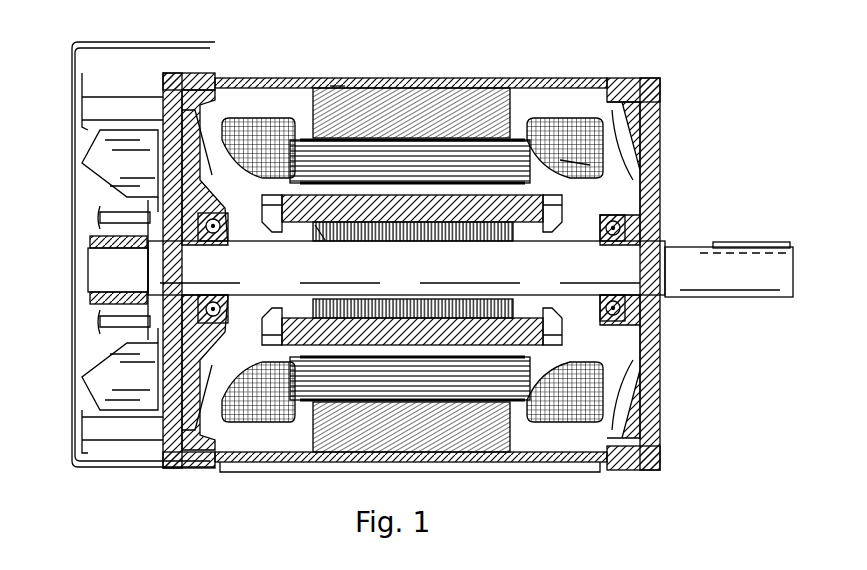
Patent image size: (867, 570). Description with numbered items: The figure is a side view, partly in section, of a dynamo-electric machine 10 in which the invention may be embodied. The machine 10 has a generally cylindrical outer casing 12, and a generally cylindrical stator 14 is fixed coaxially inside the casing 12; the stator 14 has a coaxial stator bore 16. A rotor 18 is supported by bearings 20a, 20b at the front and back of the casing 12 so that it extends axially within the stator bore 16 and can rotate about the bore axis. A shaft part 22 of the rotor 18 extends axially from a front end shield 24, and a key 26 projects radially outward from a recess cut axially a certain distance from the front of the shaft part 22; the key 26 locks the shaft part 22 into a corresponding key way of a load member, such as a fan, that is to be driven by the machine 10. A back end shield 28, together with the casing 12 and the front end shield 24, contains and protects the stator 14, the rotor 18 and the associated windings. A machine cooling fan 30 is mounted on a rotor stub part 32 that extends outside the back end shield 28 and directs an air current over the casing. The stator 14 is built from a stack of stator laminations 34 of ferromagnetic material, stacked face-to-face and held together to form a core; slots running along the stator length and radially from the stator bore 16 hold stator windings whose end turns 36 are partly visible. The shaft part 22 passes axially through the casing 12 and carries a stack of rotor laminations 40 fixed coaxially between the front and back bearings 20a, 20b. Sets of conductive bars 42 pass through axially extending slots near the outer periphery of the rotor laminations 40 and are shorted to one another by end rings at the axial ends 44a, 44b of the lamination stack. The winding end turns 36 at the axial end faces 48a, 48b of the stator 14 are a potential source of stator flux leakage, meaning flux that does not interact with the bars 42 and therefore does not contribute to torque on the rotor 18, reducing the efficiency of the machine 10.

The dynamo-electric machine 10 is at (355, 38).
The outer casing 12 is at (448, 80).
The stator 14 is at (512, 104).
The stator bore 16 is at (437, 186).
The rotor 18 is at (568, 214).
The front bearing 20a is at (613, 241).
The back bearing 20b is at (203, 241).
The shaft part 22 is at (683, 247).
The front end shield 24 is at (660, 120).
The key 26 is at (745, 242).
The back end shield 28 is at (163, 73).
The machine cooling fan 30 is at (82, 164).
The rotor stub part 32 is at (88, 266).
The stator laminations 34 is at (333, 86).
The stator winding end turns 36 is at (587, 164).
The rotor laminations 40 is at (396, 242).
The conductive bars 42 is at (326, 240).
The axial end of rotor laminations 44a is at (522, 240).
The axial end of rotor laminations 44b is at (298, 240).
The axial end face of stator 48a is at (526, 120).
The axial end face of stator 48b is at (310, 108).